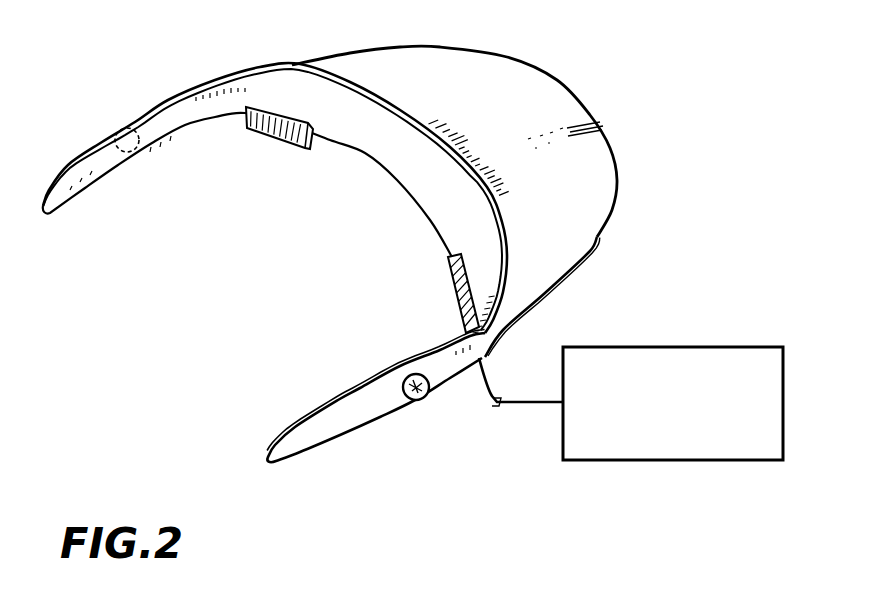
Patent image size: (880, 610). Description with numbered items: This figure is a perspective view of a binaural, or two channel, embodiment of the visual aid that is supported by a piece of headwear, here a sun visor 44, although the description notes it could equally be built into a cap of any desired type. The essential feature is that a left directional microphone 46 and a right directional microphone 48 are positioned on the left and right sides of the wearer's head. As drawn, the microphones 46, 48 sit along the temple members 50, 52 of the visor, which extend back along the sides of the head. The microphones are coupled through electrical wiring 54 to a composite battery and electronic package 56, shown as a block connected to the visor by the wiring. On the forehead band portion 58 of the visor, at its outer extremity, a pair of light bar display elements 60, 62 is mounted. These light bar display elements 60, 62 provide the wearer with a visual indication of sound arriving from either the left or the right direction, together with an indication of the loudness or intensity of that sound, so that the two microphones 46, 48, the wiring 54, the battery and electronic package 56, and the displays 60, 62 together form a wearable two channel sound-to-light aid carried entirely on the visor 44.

The sun visor 44 is at (629, 184).
The left directional microphone 46 is at (117, 132).
The right directional microphone 48 is at (420, 400).
The temple member 50 is at (233, 68).
The temple member 52 is at (336, 396).
The electrical wiring 54 is at (528, 407).
The composite battery and electronic package 56 is at (673, 347).
The forehead band portion 58 is at (430, 117).
The light bar display element 60 is at (276, 150).
The light bar display element 62 is at (447, 288).